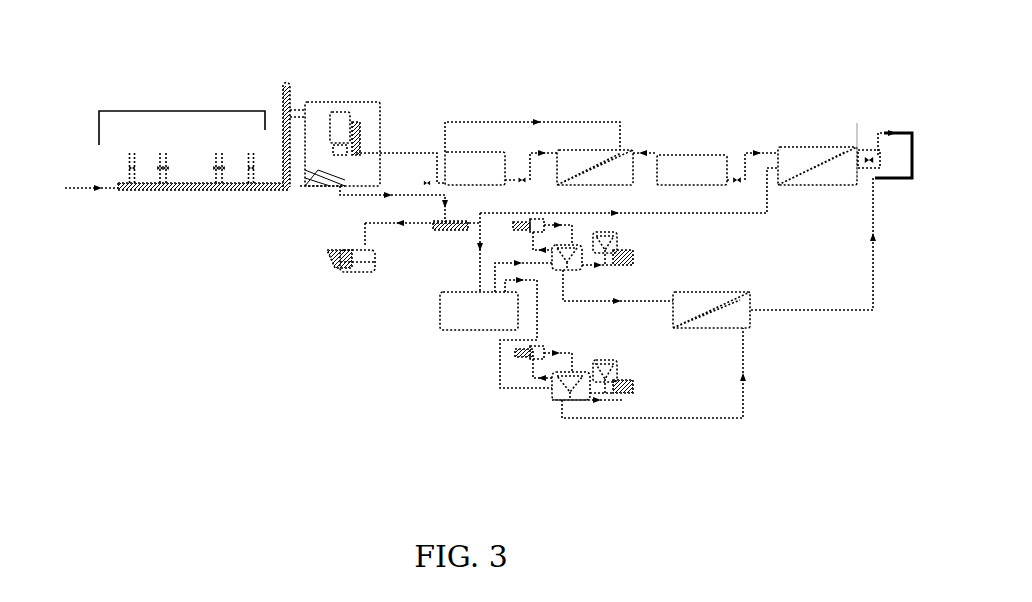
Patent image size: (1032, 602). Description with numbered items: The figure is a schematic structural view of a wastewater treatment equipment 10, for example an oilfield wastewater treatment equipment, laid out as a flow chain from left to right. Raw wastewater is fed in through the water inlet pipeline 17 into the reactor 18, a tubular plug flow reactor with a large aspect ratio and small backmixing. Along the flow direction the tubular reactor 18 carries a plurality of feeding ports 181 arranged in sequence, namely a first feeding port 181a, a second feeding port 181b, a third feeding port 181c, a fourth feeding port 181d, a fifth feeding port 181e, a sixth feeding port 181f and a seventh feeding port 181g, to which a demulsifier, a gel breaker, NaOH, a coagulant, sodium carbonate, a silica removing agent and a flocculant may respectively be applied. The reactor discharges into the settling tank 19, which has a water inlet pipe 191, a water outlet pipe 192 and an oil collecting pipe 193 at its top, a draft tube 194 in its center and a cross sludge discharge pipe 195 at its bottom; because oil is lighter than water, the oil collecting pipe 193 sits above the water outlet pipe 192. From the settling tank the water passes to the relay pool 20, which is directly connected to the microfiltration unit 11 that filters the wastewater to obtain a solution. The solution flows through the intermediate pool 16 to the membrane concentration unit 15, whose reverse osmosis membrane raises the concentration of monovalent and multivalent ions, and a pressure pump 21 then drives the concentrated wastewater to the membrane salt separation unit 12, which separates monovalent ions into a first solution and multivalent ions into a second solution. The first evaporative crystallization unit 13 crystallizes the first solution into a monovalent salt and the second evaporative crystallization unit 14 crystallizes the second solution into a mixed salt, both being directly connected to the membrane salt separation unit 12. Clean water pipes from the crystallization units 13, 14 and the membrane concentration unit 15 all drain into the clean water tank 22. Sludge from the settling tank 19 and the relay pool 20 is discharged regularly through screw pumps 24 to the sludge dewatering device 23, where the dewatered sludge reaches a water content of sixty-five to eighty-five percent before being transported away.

The wastewater treatment equipment 10 is at (427, 469).
The microfiltration unit 11 is at (628, 148).
The membrane salt separation unit 12 is at (720, 291).
The first evaporative crystallization unit 13 is at (573, 258).
The second evaporative crystallization unit 14 is at (568, 365).
The membrane concentration unit 15 is at (806, 147).
The intermediate pool 16 is at (690, 153).
The water inlet pipeline 17 is at (70, 183).
The reactor 18 is at (193, 190).
The settling tank 19 is at (328, 184).
The relay pool 20 is at (470, 151).
The pressure pump 21 is at (870, 152).
The clean water tank 22 is at (462, 320).
The sludge dewatering device 23 is at (347, 265).
The screw pumps 24 is at (445, 225).
The feeding ports 181 is at (182, 117).
The first feeding port 181a is at (108, 172).
The second feeding port 181b is at (142, 161).
The third feeding port 181c is at (172, 150).
The fourth feeding port 181d is at (179, 166).
The fifth feeding port 181e is at (207, 161).
The sixth feeding port 181f is at (231, 153).
The seventh feeding port 181g is at (263, 159).
The water inlet pipe 191 is at (289, 80).
The water outlet pipe 192 is at (358, 128).
The oil collecting pipe 193 is at (385, 106).
The draft tube 194 is at (344, 117).
The cross sludge discharge pipe 195 is at (347, 182).